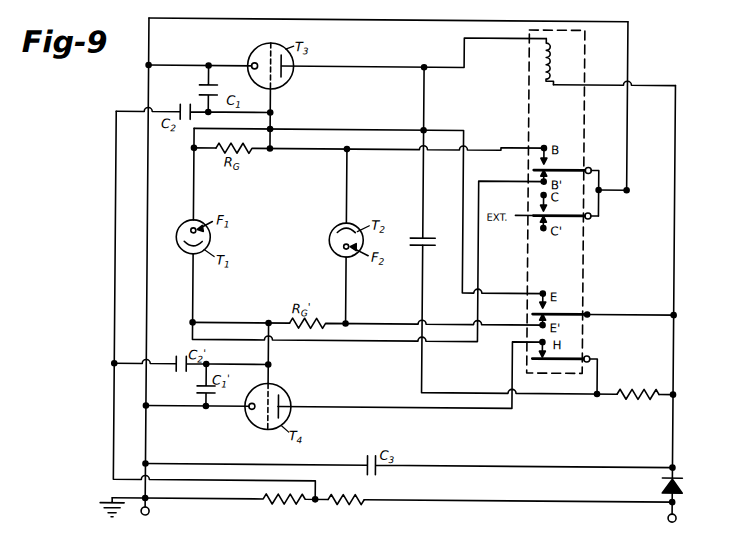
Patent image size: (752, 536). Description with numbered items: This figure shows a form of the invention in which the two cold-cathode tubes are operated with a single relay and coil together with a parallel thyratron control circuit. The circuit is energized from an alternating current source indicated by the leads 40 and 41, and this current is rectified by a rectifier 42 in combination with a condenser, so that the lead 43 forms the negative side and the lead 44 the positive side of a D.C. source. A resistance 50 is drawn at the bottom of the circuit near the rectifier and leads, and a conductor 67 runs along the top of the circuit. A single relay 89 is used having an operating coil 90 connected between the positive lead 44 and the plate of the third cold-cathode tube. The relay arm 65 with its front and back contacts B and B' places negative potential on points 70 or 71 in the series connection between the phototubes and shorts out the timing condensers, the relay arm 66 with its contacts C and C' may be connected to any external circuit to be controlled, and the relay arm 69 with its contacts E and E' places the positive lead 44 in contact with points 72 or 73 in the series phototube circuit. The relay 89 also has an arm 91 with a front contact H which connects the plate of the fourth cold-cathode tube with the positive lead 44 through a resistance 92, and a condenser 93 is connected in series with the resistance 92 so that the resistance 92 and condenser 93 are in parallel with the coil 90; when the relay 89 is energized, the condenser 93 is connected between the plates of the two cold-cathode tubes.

The lead 40 is at (151, 513).
The lead 41 is at (679, 512).
The rectifier 42 is at (683, 487).
The lead 43 is at (149, 279).
The lead 44 is at (676, 419).
The resistor 50 is at (350, 507).
The relay arm 65 is at (582, 167).
The relay arm 66 is at (574, 217).
The conductor 67 is at (334, 22).
The relay arm 69 is at (574, 315).
The point 70 is at (347, 152).
The point 71 is at (195, 322).
The point 72 is at (191, 150).
The point 73 is at (348, 323).
The relay 89 is at (583, 43).
The operating coil 90 is at (553, 66).
The relay arm 91 is at (573, 358).
The resistance 92 is at (650, 388).
The condenser 93 is at (426, 240).